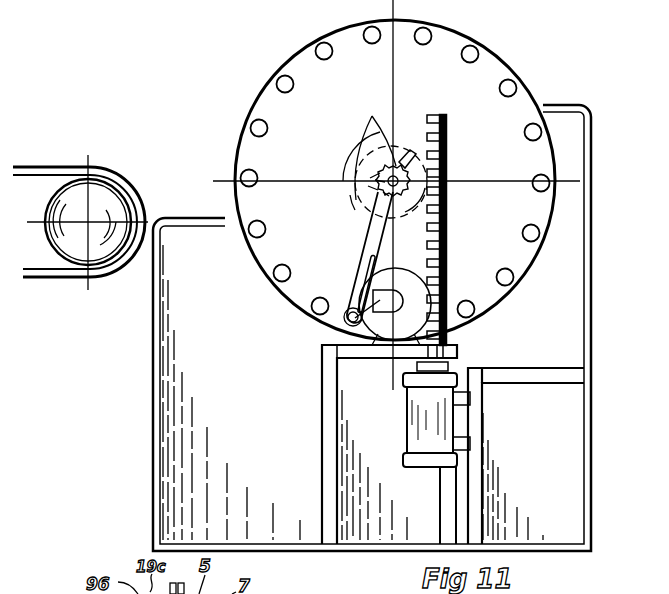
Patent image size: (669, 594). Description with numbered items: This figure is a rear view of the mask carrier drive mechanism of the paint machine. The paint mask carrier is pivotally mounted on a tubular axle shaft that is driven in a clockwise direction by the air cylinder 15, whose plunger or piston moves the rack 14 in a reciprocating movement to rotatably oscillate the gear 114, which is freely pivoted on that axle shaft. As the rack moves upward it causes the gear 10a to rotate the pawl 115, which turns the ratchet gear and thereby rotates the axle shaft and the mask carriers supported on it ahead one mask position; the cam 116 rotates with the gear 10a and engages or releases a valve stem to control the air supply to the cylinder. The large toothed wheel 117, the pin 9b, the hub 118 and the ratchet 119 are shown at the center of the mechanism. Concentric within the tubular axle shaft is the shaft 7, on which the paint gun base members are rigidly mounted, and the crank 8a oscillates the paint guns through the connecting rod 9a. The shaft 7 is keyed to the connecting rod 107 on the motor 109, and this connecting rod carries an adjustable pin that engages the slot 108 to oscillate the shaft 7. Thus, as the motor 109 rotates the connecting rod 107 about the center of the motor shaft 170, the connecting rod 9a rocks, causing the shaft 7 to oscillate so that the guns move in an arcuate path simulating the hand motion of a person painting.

The wheel 117 is at (394, 168).
The pawl 115 is at (398, 168).
The gear 114 is at (407, 165).
The cam 116 is at (428, 162).
The gear 10a is at (385, 158).
The pivot pin 9b is at (397, 164).
The hub 118 is at (380, 185).
The ratchet 119 is at (387, 197).
The rack 14 is at (447, 212).
The connecting rod 9a is at (373, 233).
The shaft 7 is at (400, 282).
The slot 108 is at (370, 264).
The motor 109 is at (345, 325).
The motor shaft 170 is at (380, 306).
The connecting rod 107 is at (338, 298).
The crank 8a is at (350, 318).
The air cylinder 15 is at (405, 422).